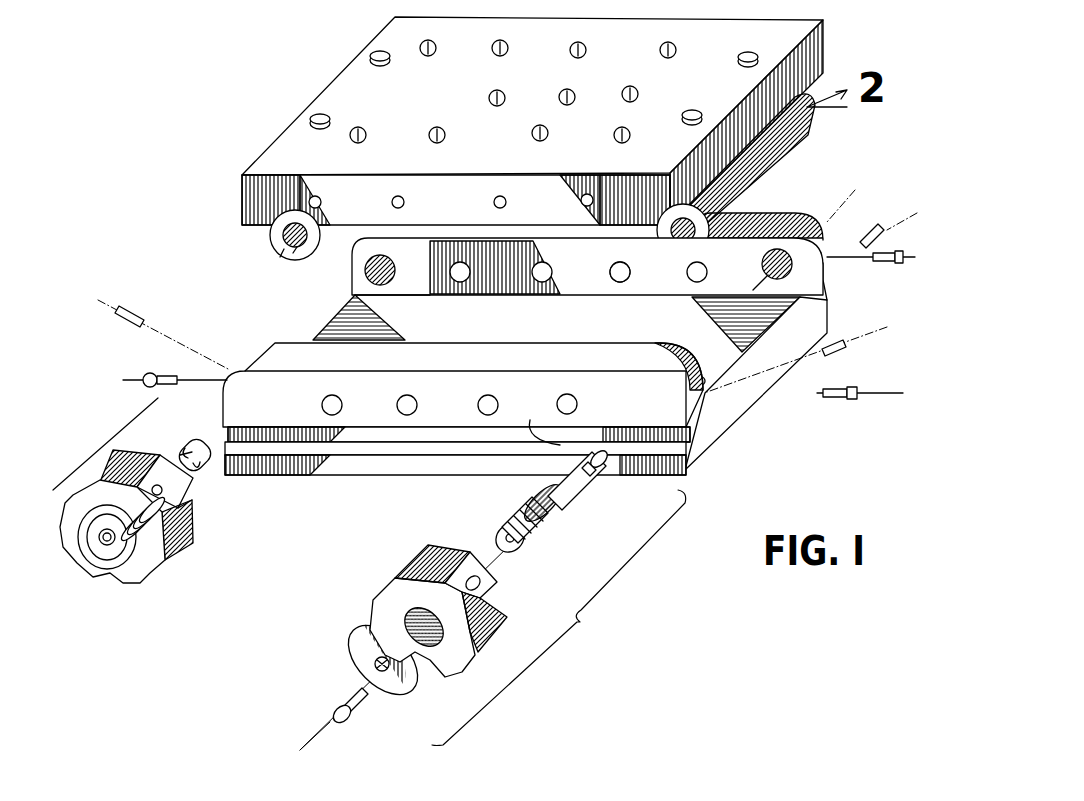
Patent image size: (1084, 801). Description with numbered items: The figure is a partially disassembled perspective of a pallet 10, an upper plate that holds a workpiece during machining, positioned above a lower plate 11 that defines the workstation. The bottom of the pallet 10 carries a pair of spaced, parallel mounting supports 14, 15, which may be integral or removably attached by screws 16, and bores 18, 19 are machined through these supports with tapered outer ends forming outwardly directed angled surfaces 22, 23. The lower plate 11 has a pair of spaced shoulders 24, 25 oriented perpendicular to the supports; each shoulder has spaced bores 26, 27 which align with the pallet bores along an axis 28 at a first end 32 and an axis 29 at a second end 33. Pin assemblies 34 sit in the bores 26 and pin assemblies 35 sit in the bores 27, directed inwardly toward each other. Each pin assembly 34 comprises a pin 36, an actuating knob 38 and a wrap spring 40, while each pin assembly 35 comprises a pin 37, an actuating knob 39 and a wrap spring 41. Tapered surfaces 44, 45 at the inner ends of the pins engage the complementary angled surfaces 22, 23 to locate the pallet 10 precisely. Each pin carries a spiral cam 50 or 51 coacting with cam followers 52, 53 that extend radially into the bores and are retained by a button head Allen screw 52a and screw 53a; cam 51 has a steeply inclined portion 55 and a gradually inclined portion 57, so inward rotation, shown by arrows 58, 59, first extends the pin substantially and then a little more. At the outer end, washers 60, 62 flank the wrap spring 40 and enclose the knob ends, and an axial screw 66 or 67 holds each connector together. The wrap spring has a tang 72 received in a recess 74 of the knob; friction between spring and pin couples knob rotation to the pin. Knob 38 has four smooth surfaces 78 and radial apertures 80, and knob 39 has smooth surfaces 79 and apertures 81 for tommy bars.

The pallet 10 is at (252, 151).
The lower plate 11 is at (386, 488).
The mounting support 14 is at (792, 152).
The mounting support 15 is at (270, 233).
The screws 16 is at (331, 124).
The bore 18 is at (700, 213).
The bore 19 is at (293, 253).
The angled surfaces 22 is at (640, 262).
The angled surfaces 23 is at (280, 257).
The shoulder 24 is at (470, 357).
The shoulder 25 is at (572, 290).
The bores 26 is at (762, 268).
The bores 27 is at (396, 272).
The axis of engagement 28 is at (312, 740).
The axis of engagement 29 is at (95, 552).
The first end 32 is at (757, 407).
The second end 33 is at (312, 330).
The pin assembly 34 is at (559, 618).
The pin assembly 35 is at (105, 444).
The pin 36 is at (588, 497).
The pin 37 is at (195, 485).
The actuating knob 38 is at (470, 650).
The actuating knob 39 is at (185, 530).
The wrap spring 40 is at (525, 545).
The wrap spring 41 is at (167, 597).
The tapered surface 44 is at (596, 470).
The tapered surface 45 is at (205, 437).
The spiral cam 50 is at (538, 424).
The spiral cam 51 is at (180, 447).
The cam follower 52 is at (870, 232).
The button head Allen screw 52a is at (880, 262).
The cam follower 53 is at (128, 303).
The screw 53a is at (152, 373).
The steeply inclined portion 55 is at (183, 447).
The gradually inclined portion 57 is at (205, 470).
The directional arrow 58 is at (349, 613).
The directional arrow 59 is at (170, 585).
The inner washer 60 is at (525, 497).
The outer washer 62 is at (355, 662).
The screw 66 is at (335, 715).
The screw 67 is at (108, 556).
The tang 72 is at (505, 525).
The recess 74 is at (368, 573).
The smooth surfaces 78 is at (405, 560).
The smooth surfaces 79 is at (190, 540).
The aperture 80 is at (482, 586).
The apertures 81 is at (180, 515).